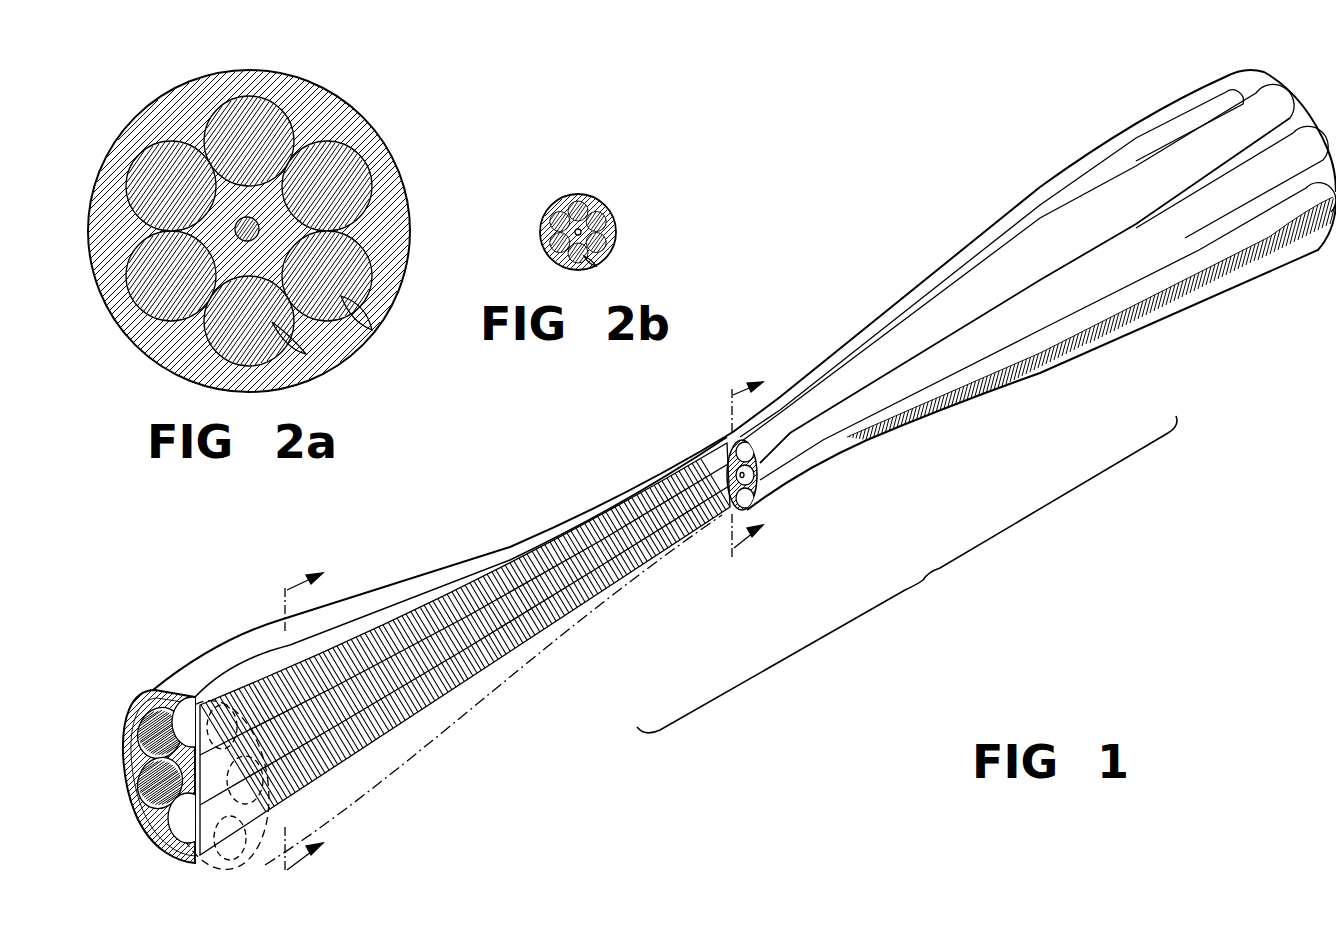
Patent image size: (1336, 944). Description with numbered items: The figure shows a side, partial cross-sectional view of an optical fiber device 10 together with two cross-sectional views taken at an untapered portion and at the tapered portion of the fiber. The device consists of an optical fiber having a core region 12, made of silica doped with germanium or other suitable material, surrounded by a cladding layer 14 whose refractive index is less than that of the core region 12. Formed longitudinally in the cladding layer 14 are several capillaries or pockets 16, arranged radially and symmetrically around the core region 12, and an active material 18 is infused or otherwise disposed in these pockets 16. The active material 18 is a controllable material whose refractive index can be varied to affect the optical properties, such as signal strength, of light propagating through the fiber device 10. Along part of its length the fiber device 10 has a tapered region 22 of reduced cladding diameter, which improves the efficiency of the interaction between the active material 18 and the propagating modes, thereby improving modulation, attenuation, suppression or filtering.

In FIG. 1, the optical fiber device 10 is at (1025, 645).
In FIG. 1, the core region 12 is at (474, 664).
In FIG. 2A, the core region 12 is at (262, 225).
In FIG. 2B, the core region 12 is at (584, 226).
In FIG. 1, the cladding layer 14 is at (660, 484).
In FIG. 2A, the cladding layer 14 is at (143, 334).
In FIG. 2B, the cladding layer 14 is at (555, 258).
In FIG. 1, the pockets 16 is at (581, 522).
In FIG. 2A, the pockets 16 is at (302, 362).
In FIG. 2B, the pockets 16 is at (600, 259).
In FIG. 1, the active material 18 is at (534, 629).
In FIG. 2A, the active material 18 is at (140, 137).
In FIG. 2B, the active material 18 is at (572, 200).
In FIG. 1, the tapered region 22 is at (907, 574).